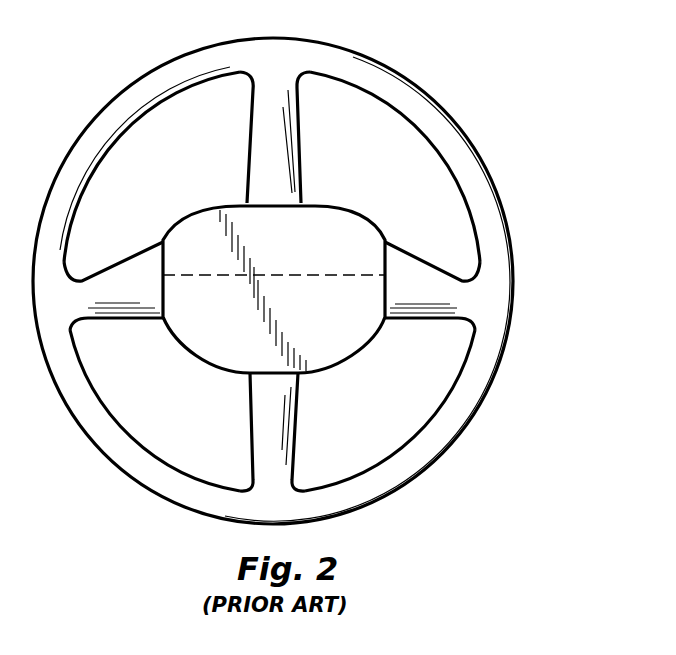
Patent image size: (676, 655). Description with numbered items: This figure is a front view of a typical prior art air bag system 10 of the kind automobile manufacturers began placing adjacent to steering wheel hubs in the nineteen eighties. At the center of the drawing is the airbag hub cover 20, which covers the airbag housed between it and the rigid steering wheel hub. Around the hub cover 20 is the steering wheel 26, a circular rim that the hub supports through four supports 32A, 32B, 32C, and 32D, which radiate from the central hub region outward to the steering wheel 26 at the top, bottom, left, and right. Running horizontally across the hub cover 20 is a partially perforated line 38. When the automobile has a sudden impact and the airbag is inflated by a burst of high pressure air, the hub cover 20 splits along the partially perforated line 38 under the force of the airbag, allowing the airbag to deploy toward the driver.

The air bag system 10 is at (522, 119).
The steering wheel 26 is at (503, 208).
The airbag hub cover 20 is at (320, 245).
The partially perforated line 38 is at (305, 276).
The support 32A is at (260, 143).
The support 32B is at (283, 427).
The support 32C is at (120, 300).
The support 32D is at (427, 302).